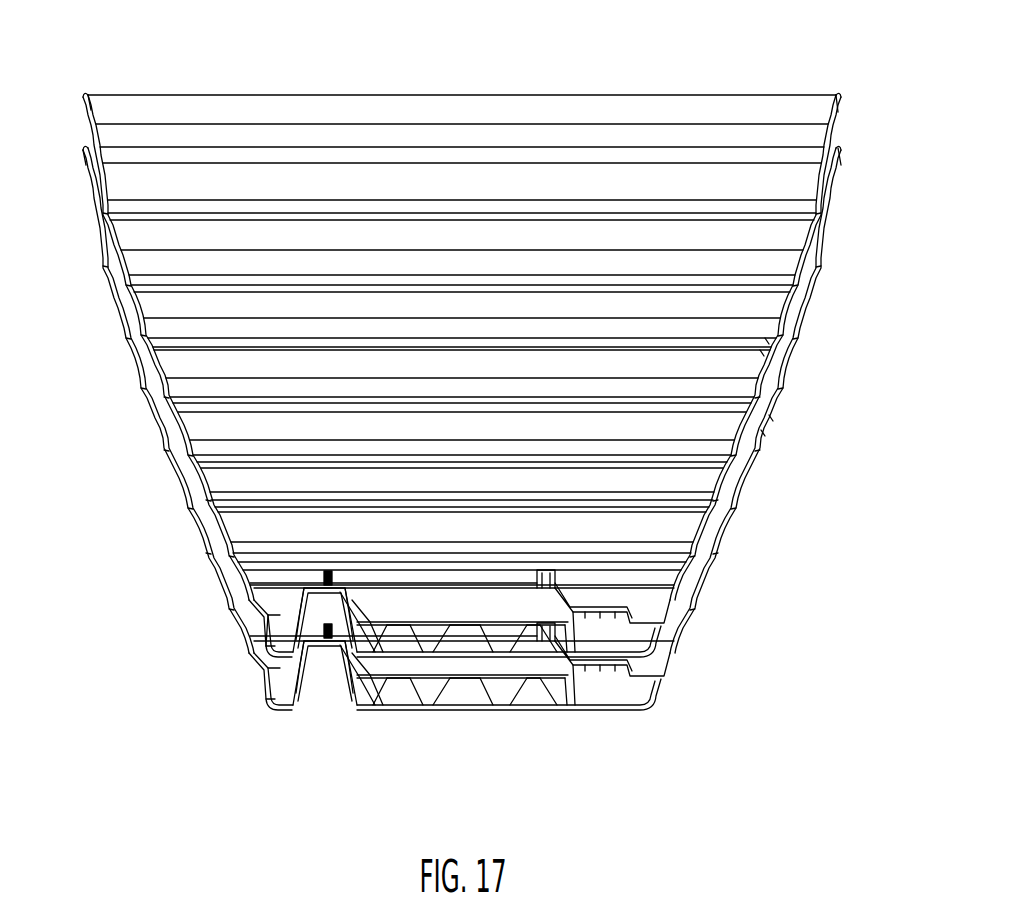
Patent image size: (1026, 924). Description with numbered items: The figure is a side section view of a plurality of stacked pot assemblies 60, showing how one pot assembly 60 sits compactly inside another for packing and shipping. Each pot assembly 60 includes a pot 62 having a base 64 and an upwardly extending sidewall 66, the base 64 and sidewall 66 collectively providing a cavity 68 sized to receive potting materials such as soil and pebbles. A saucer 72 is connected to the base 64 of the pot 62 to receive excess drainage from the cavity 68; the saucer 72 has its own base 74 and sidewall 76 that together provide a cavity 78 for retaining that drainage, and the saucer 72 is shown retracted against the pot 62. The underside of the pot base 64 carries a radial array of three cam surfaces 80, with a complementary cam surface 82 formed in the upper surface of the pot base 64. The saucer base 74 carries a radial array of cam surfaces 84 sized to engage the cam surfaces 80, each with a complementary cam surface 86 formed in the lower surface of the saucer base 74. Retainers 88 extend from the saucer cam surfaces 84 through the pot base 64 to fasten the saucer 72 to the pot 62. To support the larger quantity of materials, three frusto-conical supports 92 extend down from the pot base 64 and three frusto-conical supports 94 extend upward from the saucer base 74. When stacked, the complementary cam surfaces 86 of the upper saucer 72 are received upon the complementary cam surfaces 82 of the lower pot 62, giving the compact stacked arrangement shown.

The pot assembly 60 is at (826, 88).
The pot 62 is at (846, 112).
The base 64 is at (637, 615).
The sidewall 66 is at (756, 362).
The cavity 68 is at (88, 108).
The saucer 72 is at (262, 651).
The base 74 is at (642, 685).
The sidewall 76 is at (250, 603).
The cavity 78 is at (642, 636).
The cam surfaces 80 is at (307, 583).
The complementary cam surface 82 is at (340, 587).
The cam surfaces 84 is at (300, 585).
The complementary cam surface 86 is at (312, 670).
The retainers 88 is at (362, 690).
The frusto-conical supports 92 is at (453, 690).
The frusto-conical supports 94 is at (538, 693).